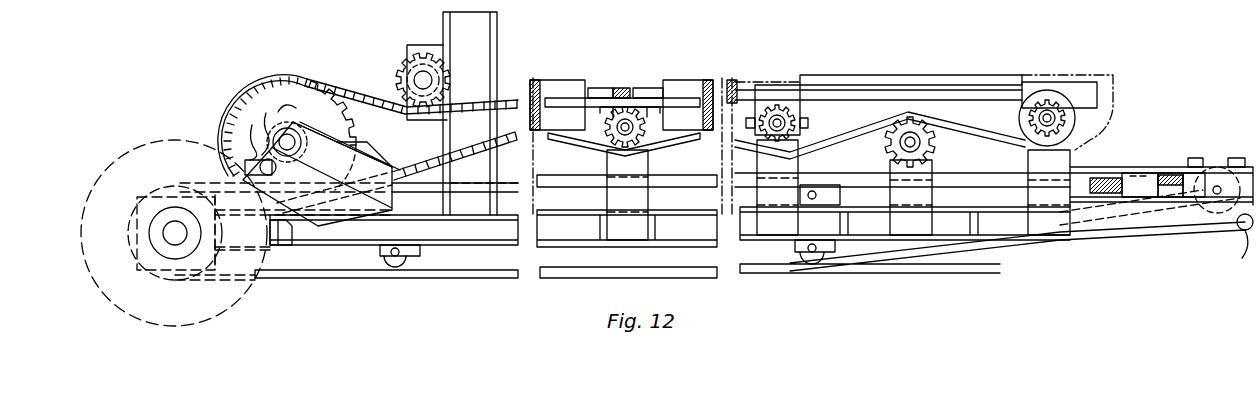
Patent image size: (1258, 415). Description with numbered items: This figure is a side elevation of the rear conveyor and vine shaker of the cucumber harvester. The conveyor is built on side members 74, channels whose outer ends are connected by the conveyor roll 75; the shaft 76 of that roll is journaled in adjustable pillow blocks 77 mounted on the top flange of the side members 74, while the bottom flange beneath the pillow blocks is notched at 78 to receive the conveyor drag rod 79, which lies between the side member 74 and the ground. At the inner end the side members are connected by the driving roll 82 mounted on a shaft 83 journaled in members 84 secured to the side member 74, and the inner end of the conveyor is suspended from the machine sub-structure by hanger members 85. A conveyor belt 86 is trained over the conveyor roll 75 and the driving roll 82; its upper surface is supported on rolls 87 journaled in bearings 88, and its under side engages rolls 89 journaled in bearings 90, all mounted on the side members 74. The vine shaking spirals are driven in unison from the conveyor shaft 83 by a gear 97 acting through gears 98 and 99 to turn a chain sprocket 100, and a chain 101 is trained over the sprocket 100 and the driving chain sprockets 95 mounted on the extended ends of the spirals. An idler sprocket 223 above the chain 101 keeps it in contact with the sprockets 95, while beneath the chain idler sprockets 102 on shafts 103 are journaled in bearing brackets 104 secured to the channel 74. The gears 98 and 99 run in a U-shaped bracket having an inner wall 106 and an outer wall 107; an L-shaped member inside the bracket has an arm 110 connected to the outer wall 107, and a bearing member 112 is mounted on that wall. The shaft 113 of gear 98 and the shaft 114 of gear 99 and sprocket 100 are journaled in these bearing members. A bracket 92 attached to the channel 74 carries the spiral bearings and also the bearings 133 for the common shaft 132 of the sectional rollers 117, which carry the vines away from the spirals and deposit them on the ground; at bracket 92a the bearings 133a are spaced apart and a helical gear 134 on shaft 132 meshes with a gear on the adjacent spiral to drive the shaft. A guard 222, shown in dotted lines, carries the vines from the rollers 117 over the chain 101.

The side members 74 is at (989, 230).
The conveyor roll 75 is at (1175, 230).
The shaft 76 is at (1217, 186).
The adjustable pillow blocks 77 is at (1190, 168).
The notch 78 is at (1240, 230).
The conveyor drag rod 79 is at (1244, 256).
The driving roll 82 is at (214, 272).
The shaft 83 is at (175, 243).
The members 84 is at (279, 246).
The hanger members 85 is at (497, 45).
The conveyor belt 86 is at (672, 182).
The rolls 87 is at (822, 195).
The bearings 88 is at (825, 205).
The rolls 89 is at (393, 263).
The bearings 90 is at (370, 250).
The bracket 92 is at (798, 160).
The bracket 92a is at (607, 170).
The driving chain sprockets 95 is at (655, 125).
The gear 97 is at (216, 146).
The gear 98 is at (258, 140).
The gear 99 is at (293, 108).
The chain sprocket 100 is at (357, 118).
The chain 101 is at (345, 85).
The idler sprockets 102 is at (945, 143).
The shafts 103 is at (888, 148).
The bearing brackets 104 is at (932, 193).
The inner wall 106 is at (392, 158).
The outer wall 107 is at (388, 234).
The arm 110 is at (302, 155).
The bearing member 112 is at (312, 130).
The shaft 113 is at (266, 122).
The shaft 114 is at (292, 130).
The rollers 117 is at (552, 82).
The shaft 132 is at (655, 88).
The bearings 133 is at (775, 85).
The bearings 133a is at (600, 88).
The helical gear 134 is at (625, 88).
The guard 222 is at (848, 75).
The idler sprocket 223 is at (400, 76).